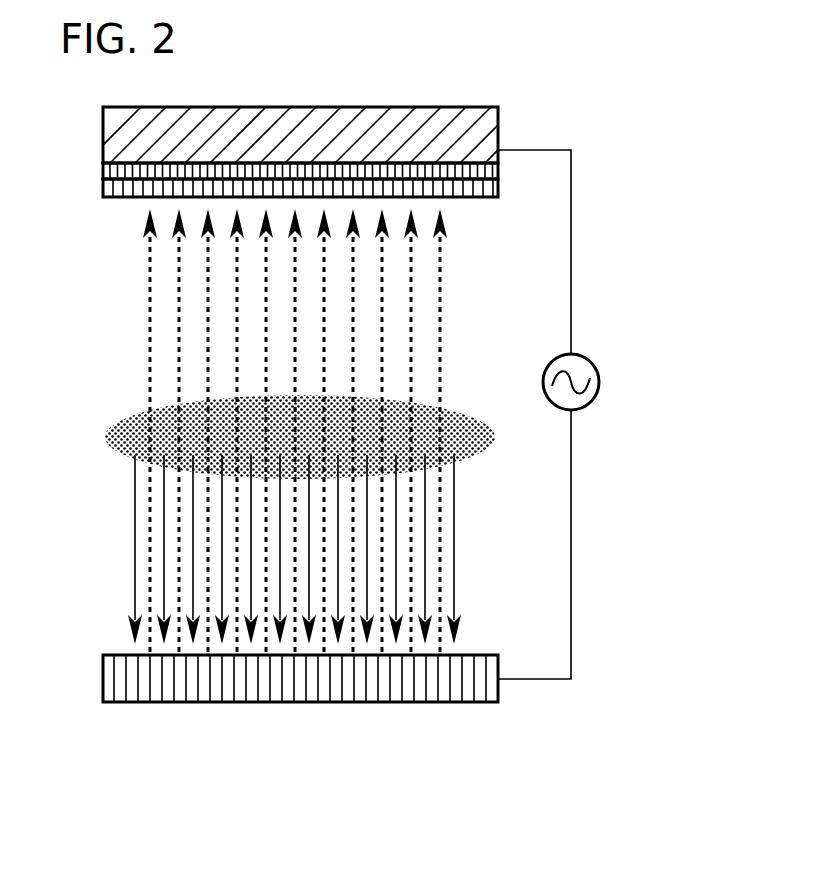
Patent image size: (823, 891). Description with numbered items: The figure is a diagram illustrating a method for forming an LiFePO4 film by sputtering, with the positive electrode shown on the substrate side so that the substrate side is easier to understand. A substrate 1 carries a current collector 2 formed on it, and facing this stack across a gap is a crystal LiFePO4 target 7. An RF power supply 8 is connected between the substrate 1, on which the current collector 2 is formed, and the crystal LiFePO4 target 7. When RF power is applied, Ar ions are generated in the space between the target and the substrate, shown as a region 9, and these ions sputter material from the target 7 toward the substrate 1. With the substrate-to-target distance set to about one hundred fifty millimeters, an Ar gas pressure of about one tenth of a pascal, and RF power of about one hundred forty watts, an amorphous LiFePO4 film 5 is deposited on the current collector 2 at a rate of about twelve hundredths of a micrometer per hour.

The substrate 1 is at (113, 120).
The current collector 2 is at (115, 172).
The amorphous LiFePO4 film 5 is at (115, 186).
The crystal LiFePO4 target 7 is at (116, 676).
The RF power supply 8 is at (598, 370).
The plasma region 9 is at (122, 427).